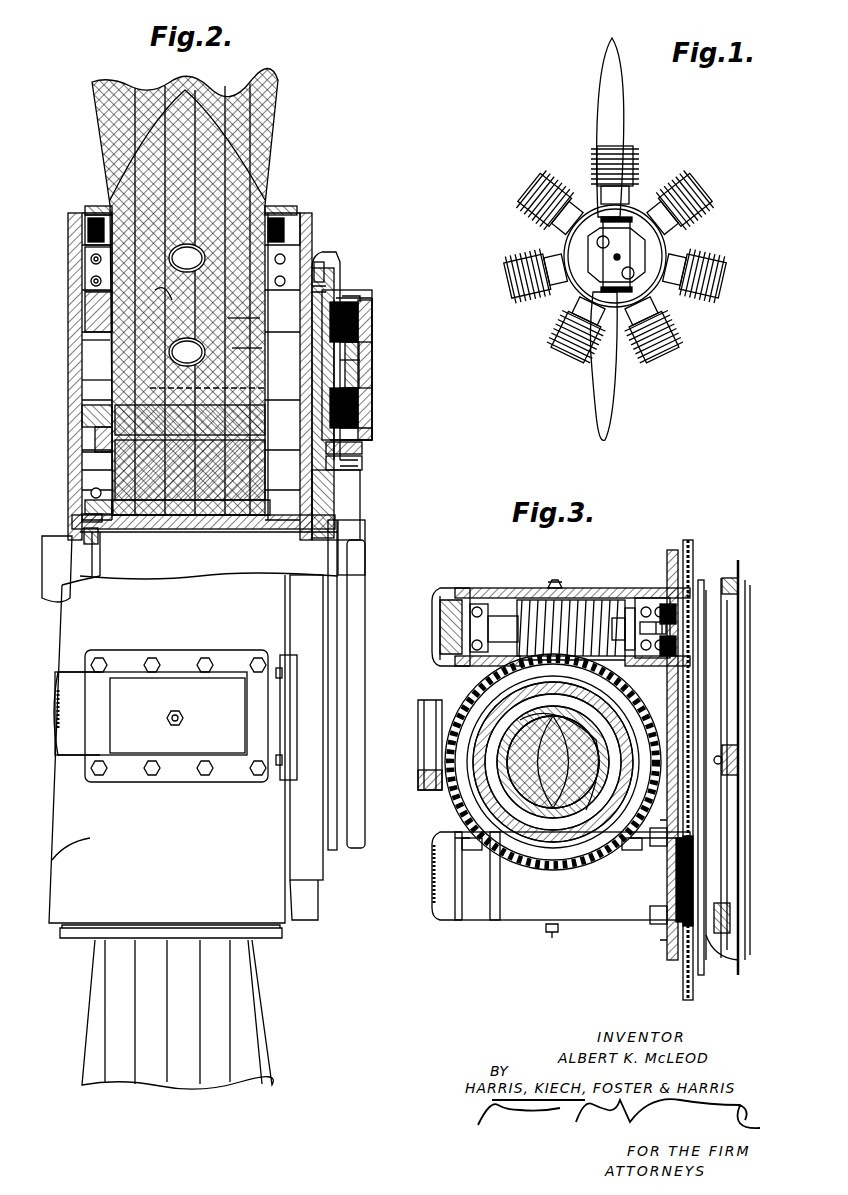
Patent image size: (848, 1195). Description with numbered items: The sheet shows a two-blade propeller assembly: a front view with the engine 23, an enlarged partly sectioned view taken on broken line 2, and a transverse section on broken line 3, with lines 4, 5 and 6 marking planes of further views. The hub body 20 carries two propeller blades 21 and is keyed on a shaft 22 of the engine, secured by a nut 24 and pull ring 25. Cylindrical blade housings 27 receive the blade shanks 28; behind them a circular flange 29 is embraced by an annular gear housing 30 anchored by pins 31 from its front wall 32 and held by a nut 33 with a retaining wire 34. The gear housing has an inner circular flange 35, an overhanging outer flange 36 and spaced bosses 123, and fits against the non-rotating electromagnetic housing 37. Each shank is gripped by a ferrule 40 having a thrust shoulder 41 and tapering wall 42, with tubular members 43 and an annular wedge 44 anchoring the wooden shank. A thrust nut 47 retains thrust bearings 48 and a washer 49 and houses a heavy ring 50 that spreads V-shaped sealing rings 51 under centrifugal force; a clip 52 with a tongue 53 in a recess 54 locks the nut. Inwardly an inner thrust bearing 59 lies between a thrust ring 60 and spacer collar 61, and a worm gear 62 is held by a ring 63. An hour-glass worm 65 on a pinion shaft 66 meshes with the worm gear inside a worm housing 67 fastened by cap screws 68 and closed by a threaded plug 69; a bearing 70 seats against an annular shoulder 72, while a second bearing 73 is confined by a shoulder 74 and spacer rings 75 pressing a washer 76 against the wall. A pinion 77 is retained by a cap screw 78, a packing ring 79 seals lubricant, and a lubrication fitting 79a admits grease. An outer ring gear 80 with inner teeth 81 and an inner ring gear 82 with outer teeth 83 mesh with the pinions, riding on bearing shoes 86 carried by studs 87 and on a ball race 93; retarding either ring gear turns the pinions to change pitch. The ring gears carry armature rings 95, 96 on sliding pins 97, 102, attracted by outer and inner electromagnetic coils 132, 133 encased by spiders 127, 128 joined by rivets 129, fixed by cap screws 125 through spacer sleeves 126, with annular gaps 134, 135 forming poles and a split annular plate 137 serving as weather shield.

In FIG. 2, the hub body 20 is at (60, 802).
In FIG. 1, the hub body 20 is at (596, 266).
In FIG. 3, the hub body 20 is at (440, 706).
In FIG. 2, the propeller blades 21 is at (270, 104).
In FIG. 1, the propeller blades 21 is at (612, 404).
In FIG. 2, the shaft 22 is at (110, 570).
In FIG. 2, the engine 23 is at (396, 560).
In FIG. 1, the engine 23 is at (668, 258).
In FIG. 2, the nut 24 is at (60, 600).
In FIG. 3, the nut 24 is at (426, 746).
In FIG. 2, the pull ring 25 is at (88, 538).
In FIG. 2, the blade housings 27 is at (75, 336).
In FIG. 3, the blade housings 27 is at (420, 786).
In FIG. 2, the shanks 28 is at (114, 384).
In FIG. 3, the shanks 28 is at (490, 790).
In FIG. 2, the circular flange 29 is at (335, 505).
In FIG. 2, the gear housing 30 is at (340, 262).
In FIG. 2, the pins 31 is at (190, 470).
In FIG. 2, the front wall 32 is at (190, 426).
In FIG. 3, the front wall 32 is at (690, 830).
In FIG. 2, the nut 33 is at (330, 490).
In FIG. 2, the retaining wire 34 is at (350, 530).
In FIG. 2, the inner circular flange 35 is at (240, 528).
In FIG. 2, the outer flange 36 is at (342, 292).
In FIG. 2, the electromagnetic housing 37 is at (366, 318).
In FIG. 2, the ferrule 40 is at (110, 356).
In FIG. 3, the ferrule 40 is at (540, 820).
In FIG. 2, the thrust shoulder 41 is at (86, 304).
In FIG. 2, the tapering wall 42 is at (90, 466).
In FIG. 2, the tubular members 43 is at (170, 296).
In FIG. 2, the annular wedge 44 is at (168, 528).
In FIG. 3, the annular wedge 44 is at (560, 860).
In FIG. 2, the thrust nut 47 is at (100, 210).
In FIG. 2, the thrust bearings 48 is at (90, 258).
In FIG. 2, the washer 49 is at (90, 282).
In FIG. 2, the ring 50 is at (84, 230).
In FIG. 2, the sealing rings 51 is at (90, 226).
In FIG. 2, the clip 52 is at (306, 228).
In FIG. 2, the tongue 53 is at (288, 212).
In FIG. 2, the recess 54 is at (300, 212).
In FIG. 2, the inner thrust bearing 59 is at (86, 506).
In FIG. 2, the thrust ring 60 is at (86, 522).
In FIG. 2, the spacer collar 61 is at (88, 484).
In FIG. 2, the worm gear 62 is at (96, 446).
In FIG. 3, the worm gear 62 is at (532, 870).
In FIG. 2, the ring 63 is at (96, 412).
In FIG. 3, the worm 65 is at (530, 600).
In FIG. 3, the pinion shaft 66 is at (632, 608).
In FIG. 2, the worm housing 67 is at (130, 748).
In FIG. 1, the worm housing 67 is at (634, 274).
In FIG. 3, the worm housing 67 is at (480, 590).
In FIG. 2, the cap screws 68 is at (250, 778).
In FIG. 3, the cap screws 68 is at (594, 858).
In FIG. 2, the threaded plug 69 is at (58, 716).
In FIG. 3, the threaded plug 69 is at (440, 618).
In FIG. 3, the bearing 70 is at (464, 650).
In FIG. 3, the annular shoulder 72 is at (476, 604).
In FIG. 3, the second bearing 73 is at (650, 598).
In FIG. 3, the annular shoulder 74 is at (618, 618).
In FIG. 3, the spacer rings 75 is at (672, 580).
In FIG. 3, the washer 76 is at (680, 650).
In FIG. 3, the pinion 77 is at (688, 920).
In FIG. 3, the cap screw 78 is at (666, 634).
In FIG. 3, the packing ring 79 is at (738, 594).
In FIG. 2, the lubrication fitting 79a is at (176, 728).
In FIG. 3, the lubrication fitting 79a is at (556, 938).
In FIG. 2, the outer ring gear 80 is at (384, 303).
In FIG. 3, the outer ring gear 80 is at (684, 970).
In FIG. 3, the inner teeth 81 is at (704, 580).
In FIG. 2, the inner ring gear 82 is at (207, 389).
In FIG. 3, the inner ring gear 82 is at (690, 790).
In FIG. 3, the outer teeth 83 is at (700, 886).
In FIG. 2, the bearing shoes 86 is at (320, 270).
In FIG. 2, the studs 87 is at (346, 302).
In FIG. 2, the ball race 93 is at (302, 530).
In FIG. 2, the outer armature ring 95 is at (360, 346).
In FIG. 2, the inner armature ring 96 is at (340, 392).
In FIG. 3, the inner armature ring 96 is at (700, 860).
In FIG. 2, the pins 97 is at (242, 323).
In FIG. 2, the pins 102 is at (356, 438).
In FIG. 2, the bosses 123 is at (244, 355).
In FIG. 2, the cap screws 125 is at (354, 466).
In FIG. 2, the spacer sleeves 126 is at (360, 452).
In FIG. 2, the spider 127 is at (350, 366).
In FIG. 3, the spider 127 is at (732, 680).
In FIG. 2, the spider 128 is at (348, 356).
In FIG. 3, the spider 128 is at (715, 712).
In FIG. 3, the rivets 129 is at (740, 762).
In FIG. 2, the outer electromagnetic coil 132 is at (358, 330).
In FIG. 2, the inner electromagnetic coil 133 is at (354, 426).
In FIG. 2, the annular gap 134 is at (356, 322).
In FIG. 2, the annular gap 135 is at (356, 402).
In FIG. 3, the split annular plate 137 is at (740, 948).
In FIG. 1, the broken line 2— 2 is at (619, 314).
In FIG. 2, the broken line 3— 3 is at (58, 416).
In FIG. 2, the section line 4 is at (328, 224).
In FIG. 2, the section line 5 is at (330, 252).
In FIG. 2, the section line 6 is at (304, 154).